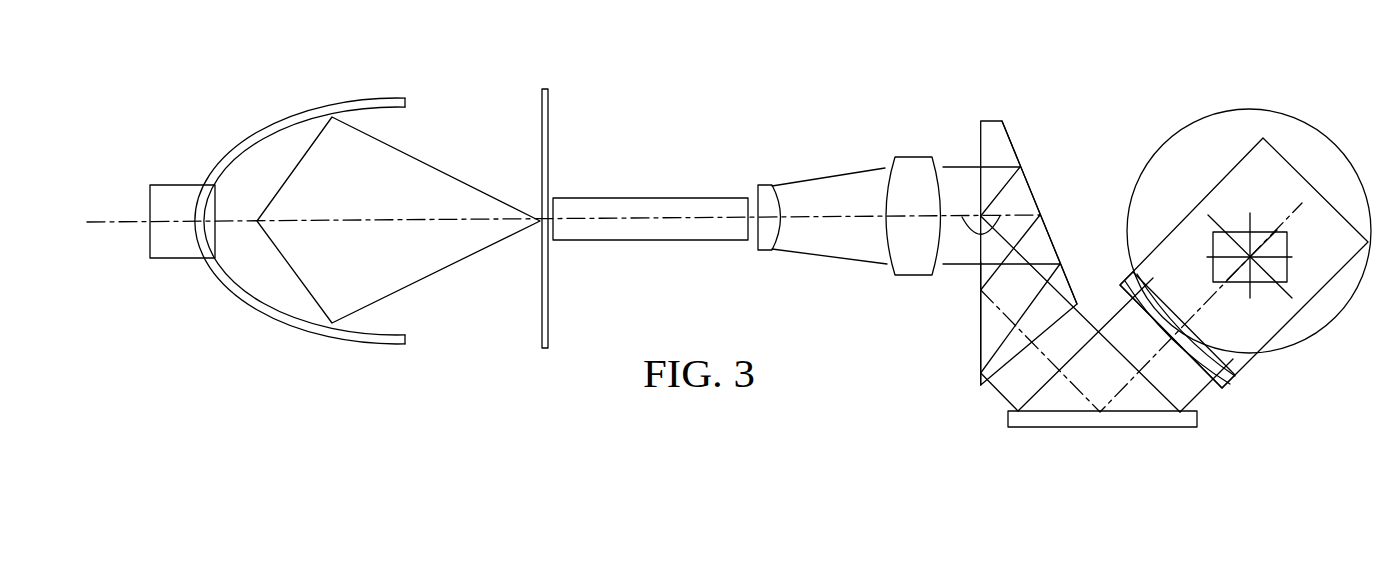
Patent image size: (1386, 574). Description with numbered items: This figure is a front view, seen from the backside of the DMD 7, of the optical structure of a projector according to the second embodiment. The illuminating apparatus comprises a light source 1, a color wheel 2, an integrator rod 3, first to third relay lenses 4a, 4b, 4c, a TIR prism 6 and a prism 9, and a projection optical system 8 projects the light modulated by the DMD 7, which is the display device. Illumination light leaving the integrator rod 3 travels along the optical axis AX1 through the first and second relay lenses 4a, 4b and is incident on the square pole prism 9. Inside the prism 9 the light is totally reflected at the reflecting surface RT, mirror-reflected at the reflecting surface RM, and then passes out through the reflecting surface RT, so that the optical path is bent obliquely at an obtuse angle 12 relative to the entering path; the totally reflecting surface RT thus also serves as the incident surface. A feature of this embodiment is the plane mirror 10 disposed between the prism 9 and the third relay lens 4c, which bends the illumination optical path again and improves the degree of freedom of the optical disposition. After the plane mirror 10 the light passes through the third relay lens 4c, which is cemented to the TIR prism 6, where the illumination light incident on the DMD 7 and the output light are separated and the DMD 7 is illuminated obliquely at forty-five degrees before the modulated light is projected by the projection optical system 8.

The light source 1 is at (300, 112).
The color wheel 2 is at (545, 88).
The integrator rod 3 is at (650, 197).
The first relay lens 4a is at (763, 184).
The second relay lens 4b is at (913, 156).
The third relay lens 4c is at (1219, 389).
The TIR prism 6 is at (1295, 318).
The DMD 7 is at (1290, 273).
The projection optical system 8 is at (1188, 120).
The prism 9 is at (990, 120).
The plane mirror 10 is at (1008, 418).
The obtuse angle 12 is at (962, 222).
The optical axis AX1 is at (830, 219).
The mirror-reflecting surface RM is at (1035, 193).
The totally reflecting surface RT is at (980, 345).